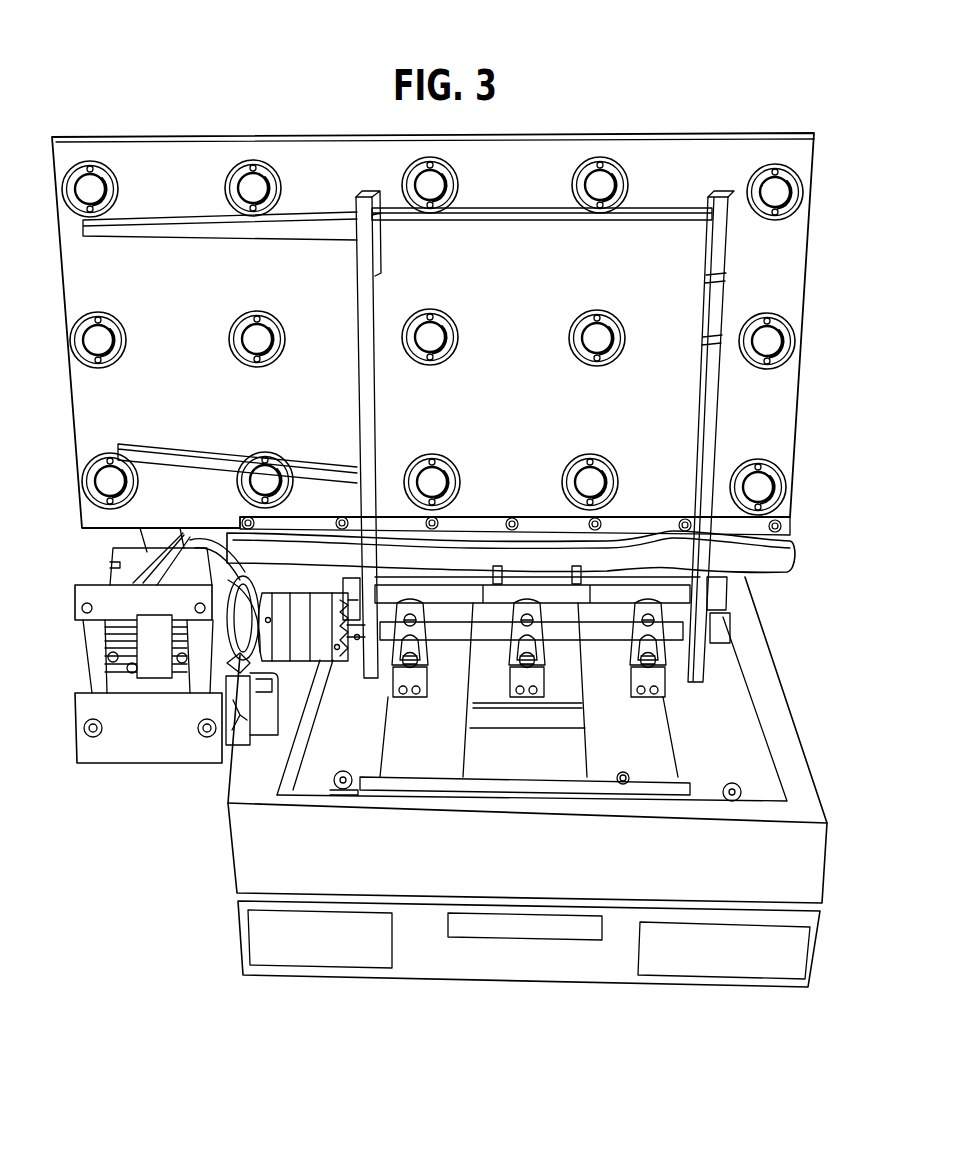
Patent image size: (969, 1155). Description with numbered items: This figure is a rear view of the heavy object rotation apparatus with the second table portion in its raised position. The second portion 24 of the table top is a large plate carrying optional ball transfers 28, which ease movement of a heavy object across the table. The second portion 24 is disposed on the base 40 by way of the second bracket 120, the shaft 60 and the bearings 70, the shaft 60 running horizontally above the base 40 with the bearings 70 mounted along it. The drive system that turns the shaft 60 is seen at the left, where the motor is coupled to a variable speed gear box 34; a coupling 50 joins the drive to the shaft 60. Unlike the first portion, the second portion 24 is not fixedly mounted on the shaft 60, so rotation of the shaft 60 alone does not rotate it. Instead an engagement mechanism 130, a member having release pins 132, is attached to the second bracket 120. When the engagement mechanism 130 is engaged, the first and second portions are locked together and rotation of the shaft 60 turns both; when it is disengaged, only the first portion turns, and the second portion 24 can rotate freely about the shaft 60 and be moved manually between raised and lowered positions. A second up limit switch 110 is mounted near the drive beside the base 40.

The second portion 24 is at (777, 295).
The ball transfers 28 is at (786, 196).
The variable speed gear box 34 is at (102, 642).
The base 40 is at (773, 875).
The coupling 50 is at (330, 658).
The shaft 60 is at (593, 640).
The bearings 70 is at (528, 697).
The second up limit switch 110 is at (240, 703).
The second bracket 120 is at (713, 412).
The engagement mechanism 130 is at (660, 596).
The release pins 132 is at (584, 572).